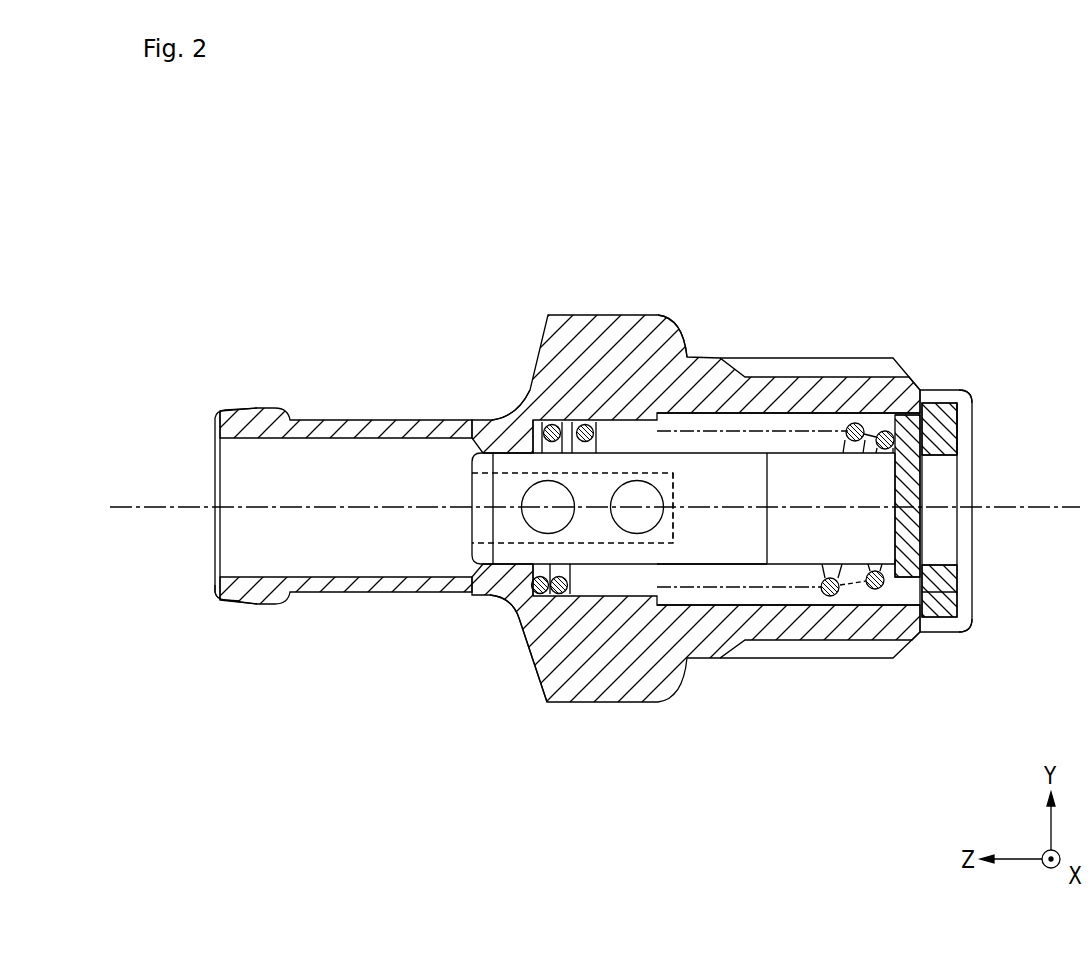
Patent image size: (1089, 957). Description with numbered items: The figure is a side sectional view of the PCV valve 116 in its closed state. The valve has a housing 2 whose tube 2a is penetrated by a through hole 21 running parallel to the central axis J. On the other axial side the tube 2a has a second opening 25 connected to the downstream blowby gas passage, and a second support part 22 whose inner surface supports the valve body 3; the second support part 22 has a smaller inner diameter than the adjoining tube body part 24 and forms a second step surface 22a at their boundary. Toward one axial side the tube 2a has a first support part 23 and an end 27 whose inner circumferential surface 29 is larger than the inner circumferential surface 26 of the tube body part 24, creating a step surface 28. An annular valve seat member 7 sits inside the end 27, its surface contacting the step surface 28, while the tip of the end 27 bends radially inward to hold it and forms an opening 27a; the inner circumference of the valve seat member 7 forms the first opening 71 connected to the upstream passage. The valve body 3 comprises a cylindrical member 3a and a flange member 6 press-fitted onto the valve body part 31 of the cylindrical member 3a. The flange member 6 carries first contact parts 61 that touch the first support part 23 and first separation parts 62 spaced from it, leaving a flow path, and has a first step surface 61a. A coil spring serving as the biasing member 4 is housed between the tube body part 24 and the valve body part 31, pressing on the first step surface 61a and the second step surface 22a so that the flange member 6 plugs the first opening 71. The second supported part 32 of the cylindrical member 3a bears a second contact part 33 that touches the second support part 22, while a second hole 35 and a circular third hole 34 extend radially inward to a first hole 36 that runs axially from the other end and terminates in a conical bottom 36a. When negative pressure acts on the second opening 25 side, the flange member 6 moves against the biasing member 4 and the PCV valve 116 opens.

The PCV valve 116 is at (953, 208).
The housing 2 is at (612, 325).
The tube 2a is at (685, 356).
The through hole 21 is at (372, 432).
The second support part 22 is at (497, 427).
The second step surface 22a is at (535, 420).
The first support part 23 is at (905, 390).
The tube body part 24 is at (712, 412).
The second opening 25 is at (237, 575).
The valve body 3 is at (748, 548).
The cylindrical member 3a is at (765, 566).
The valve body part 31 is at (712, 546).
The second supported part 32 is at (520, 624).
The second contact part 33 is at (483, 548).
The third hole 34 is at (641, 522).
The second hole 35 is at (557, 525).
The first hole 36 is at (576, 488).
The bottom 36a is at (687, 493).
The biasing member 4 is at (854, 423).
The flange member 6 is at (924, 541).
The first contact parts 61 is at (921, 395).
The first step surface 61a is at (901, 414).
The first separation parts 62 is at (905, 578).
The valve seat member 7 is at (960, 392).
The first opening 71 is at (940, 463).
The inner circumferential surface 26 is at (924, 563).
The end 27 is at (932, 410).
The opening 27a is at (950, 418).
The step surface 28 is at (958, 627).
The inner circumferential surface 29 is at (945, 390).
The central axis J is at (145, 507).